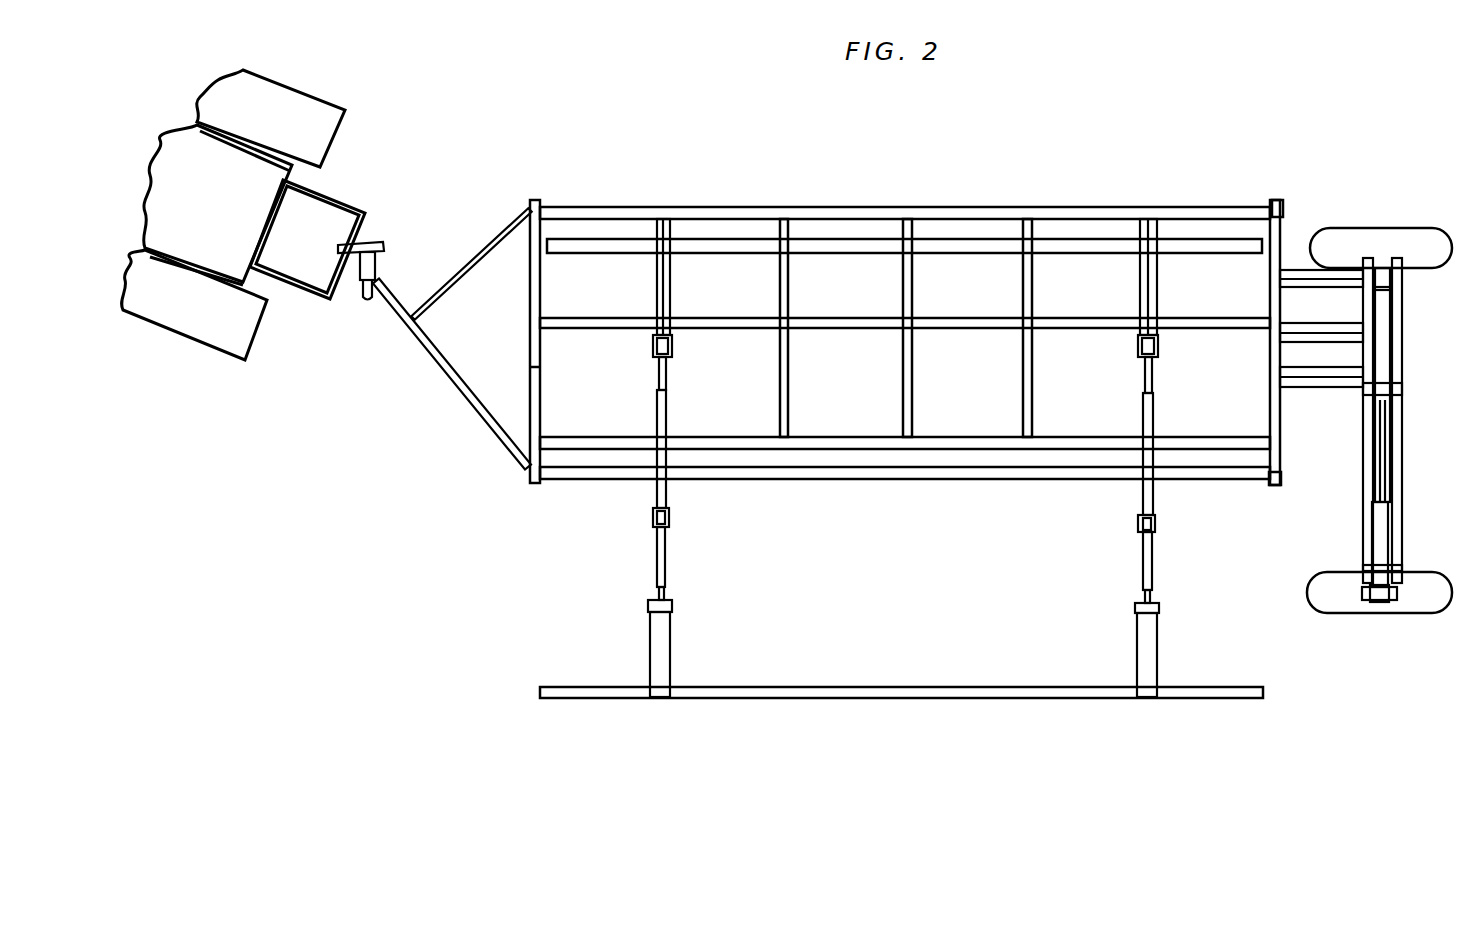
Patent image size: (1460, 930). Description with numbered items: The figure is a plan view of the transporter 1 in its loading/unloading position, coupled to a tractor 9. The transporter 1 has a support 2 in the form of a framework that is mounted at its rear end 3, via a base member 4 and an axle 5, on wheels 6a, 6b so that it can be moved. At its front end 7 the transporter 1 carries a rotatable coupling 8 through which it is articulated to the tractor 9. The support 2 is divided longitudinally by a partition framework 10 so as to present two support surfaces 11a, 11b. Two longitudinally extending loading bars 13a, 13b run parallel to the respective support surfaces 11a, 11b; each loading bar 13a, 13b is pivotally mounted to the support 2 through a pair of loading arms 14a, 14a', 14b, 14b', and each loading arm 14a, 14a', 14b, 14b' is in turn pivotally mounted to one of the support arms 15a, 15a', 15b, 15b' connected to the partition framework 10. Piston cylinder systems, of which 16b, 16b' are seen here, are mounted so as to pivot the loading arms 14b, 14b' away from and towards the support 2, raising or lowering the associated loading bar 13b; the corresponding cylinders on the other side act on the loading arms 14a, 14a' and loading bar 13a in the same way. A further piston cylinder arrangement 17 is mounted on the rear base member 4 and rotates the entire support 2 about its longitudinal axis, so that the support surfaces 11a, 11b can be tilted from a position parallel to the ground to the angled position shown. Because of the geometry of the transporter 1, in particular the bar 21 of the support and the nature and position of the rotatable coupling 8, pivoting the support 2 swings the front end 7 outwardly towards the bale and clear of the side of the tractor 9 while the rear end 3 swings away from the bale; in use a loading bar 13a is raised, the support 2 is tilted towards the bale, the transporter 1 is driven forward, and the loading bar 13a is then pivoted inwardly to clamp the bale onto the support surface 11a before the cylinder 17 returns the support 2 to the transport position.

The transporter 1 is at (437, 393).
The support 2 is at (887, 206).
The rear end 3 is at (1283, 216).
The base member 4 is at (1397, 372).
The axle 5 is at (1378, 280).
The wheel 6a is at (1332, 605).
The wheel 6b is at (1330, 233).
The front end 7 is at (530, 268).
The rotatable coupling 8 is at (362, 270).
The tractor 9 is at (305, 132).
The partition framework 10 is at (565, 318).
The support surface 11a is at (783, 393).
The support surface 11b is at (783, 276).
The loading bar 13a is at (868, 688).
The loading bar 13b is at (1050, 248).
The loading arm 14a is at (611, 648).
The loading arm 14a' is at (1188, 650).
The loading arm 14b is at (669, 251).
The loading arm 14b' is at (1165, 245).
The support arm 15a is at (606, 546).
The support arm 15a' is at (1194, 551).
The support arm 15b is at (614, 432).
The support arm 15b' is at (1192, 436).
The piston cylinder system 16b is at (693, 372).
The piston cylinder system 16b' is at (1100, 356).
The piston cylinder arrangement 17 is at (1385, 470).
The bar 21 is at (482, 420).